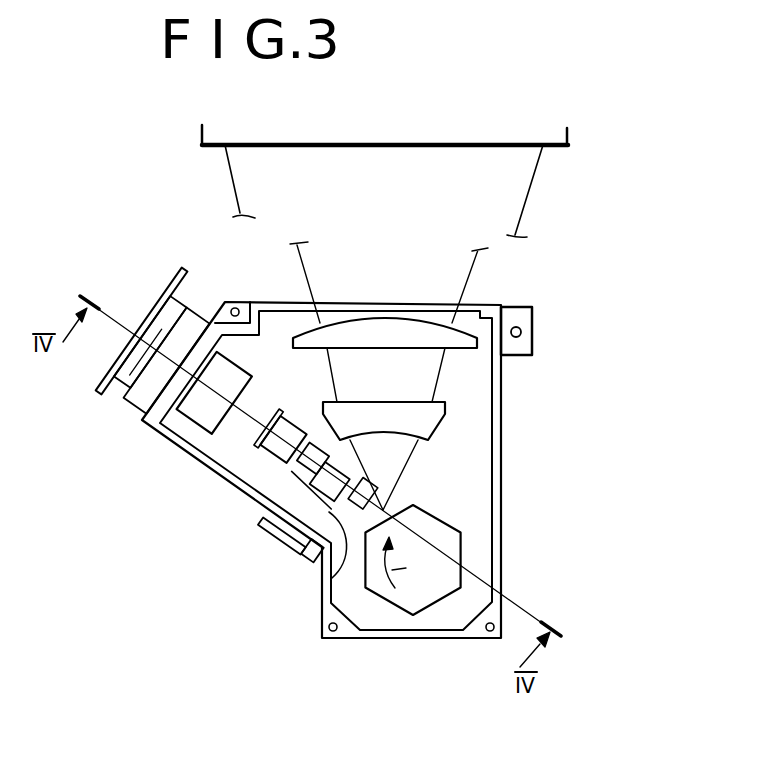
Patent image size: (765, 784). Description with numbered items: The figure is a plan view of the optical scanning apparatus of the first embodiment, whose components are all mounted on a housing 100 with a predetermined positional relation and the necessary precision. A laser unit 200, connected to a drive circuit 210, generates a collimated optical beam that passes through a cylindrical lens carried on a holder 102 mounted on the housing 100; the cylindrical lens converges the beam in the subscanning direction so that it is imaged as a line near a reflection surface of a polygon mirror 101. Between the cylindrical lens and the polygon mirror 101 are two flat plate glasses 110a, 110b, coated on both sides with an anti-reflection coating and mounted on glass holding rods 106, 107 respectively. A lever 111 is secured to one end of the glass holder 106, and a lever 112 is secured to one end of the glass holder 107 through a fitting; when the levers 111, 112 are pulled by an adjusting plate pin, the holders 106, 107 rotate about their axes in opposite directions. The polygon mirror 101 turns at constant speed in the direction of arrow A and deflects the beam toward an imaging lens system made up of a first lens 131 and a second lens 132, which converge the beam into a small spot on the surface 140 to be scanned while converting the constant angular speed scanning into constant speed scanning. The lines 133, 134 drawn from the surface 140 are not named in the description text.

The housing 100 is at (503, 443).
The polygon mirror 101 is at (453, 542).
The holder 102 is at (272, 450).
The glass holding rod 106 is at (292, 488).
The glass holding rod 107 is at (328, 577).
The flat plate glass 110a is at (320, 450).
The flat plate glass 110b is at (370, 485).
The lever 111 is at (273, 525).
The lever 112 is at (293, 552).
The first lens 131 is at (437, 418).
The second lens 132 is at (459, 338).
The scanning beam 133 is at (241, 191).
The scanning beam 134 is at (533, 196).
The surface to be scanned 140 is at (573, 140).
The laser unit 200 is at (130, 397).
The drive circuit 210 is at (100, 387).